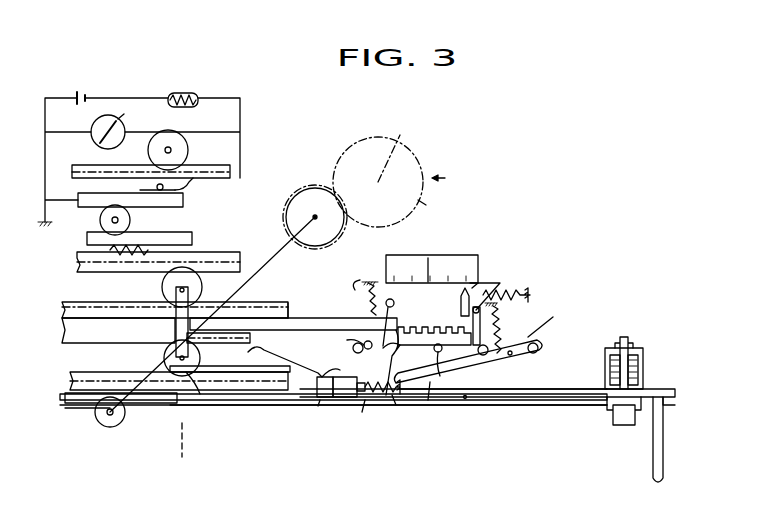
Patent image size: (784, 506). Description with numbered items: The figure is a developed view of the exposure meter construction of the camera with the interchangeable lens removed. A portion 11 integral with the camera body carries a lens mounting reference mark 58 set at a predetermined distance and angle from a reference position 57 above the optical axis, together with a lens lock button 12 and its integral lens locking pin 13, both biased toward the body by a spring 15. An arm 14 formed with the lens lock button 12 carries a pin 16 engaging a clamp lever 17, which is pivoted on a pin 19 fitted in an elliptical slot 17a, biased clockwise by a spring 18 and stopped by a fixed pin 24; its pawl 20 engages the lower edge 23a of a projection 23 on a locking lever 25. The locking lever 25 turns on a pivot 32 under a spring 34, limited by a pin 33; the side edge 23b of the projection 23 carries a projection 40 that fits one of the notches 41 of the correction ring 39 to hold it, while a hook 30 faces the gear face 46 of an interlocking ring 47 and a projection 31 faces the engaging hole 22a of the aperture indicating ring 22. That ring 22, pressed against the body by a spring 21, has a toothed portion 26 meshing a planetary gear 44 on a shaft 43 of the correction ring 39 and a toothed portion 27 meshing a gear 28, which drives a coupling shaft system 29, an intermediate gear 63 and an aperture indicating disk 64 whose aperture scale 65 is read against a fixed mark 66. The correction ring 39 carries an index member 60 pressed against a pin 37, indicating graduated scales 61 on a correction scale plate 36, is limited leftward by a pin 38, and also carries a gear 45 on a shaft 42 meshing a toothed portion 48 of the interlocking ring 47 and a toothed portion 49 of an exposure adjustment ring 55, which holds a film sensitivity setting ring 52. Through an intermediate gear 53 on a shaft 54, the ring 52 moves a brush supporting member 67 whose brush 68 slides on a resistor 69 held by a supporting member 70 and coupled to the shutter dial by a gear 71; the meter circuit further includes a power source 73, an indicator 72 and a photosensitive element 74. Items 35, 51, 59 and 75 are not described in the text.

The camera body portion 11 is at (527, 400).
The lens lock button 12 is at (620, 428).
The lens locking pin 13 is at (652, 452).
The arm 14 is at (563, 388).
The spring 15 is at (640, 365).
The pin 16 is at (486, 331).
The clamp lever 17 is at (520, 357).
The elliptical slot 17a is at (564, 327).
The spring 18 is at (506, 329).
The pin 19 is at (539, 349).
The pawl 20 is at (428, 400).
The spring 21 is at (361, 419).
The aperture indicating ring 22 is at (266, 400).
The engaging hole 22a is at (320, 406).
The projection 23 is at (365, 353).
The lower edge 23a is at (396, 405).
The side edge 23b is at (420, 356).
The fixed pin 24 is at (503, 380).
The locking lever 25 is at (304, 360).
The toothed portion 26 is at (118, 371).
The toothed portion 27 is at (72, 405).
The gear 28 is at (120, 419).
The coupling shaft system 29 is at (270, 255).
The hook 30 is at (285, 359).
The projection 31 is at (303, 395).
The pivot 32 is at (340, 400).
The pin 33 is at (345, 341).
The spring 34 is at (347, 274).
The arm 35 is at (520, 334).
The correction scale plate 36 is at (445, 256).
The pin 37 is at (496, 284).
The pin 38 is at (360, 298).
The correction ring 39 is at (318, 318).
The projection 40 is at (396, 328).
The notches 41 is at (402, 313).
The shaft 42 is at (200, 290).
The shaft 43 is at (198, 398).
The planetary gear 44 is at (164, 360).
The gear 45 is at (162, 296).
The toothed portion 46 is at (216, 368).
The interlocking ring 47 is at (118, 345).
The toothed portion 48 is at (282, 304).
The toothed portion 49 is at (97, 302).
The plate 51 is at (80, 256).
The film sensitivity setting ring 52 is at (192, 238).
The intermediate gear 53 is at (131, 220).
The shaft 54 is at (90, 222).
The exposure adjustment ring 55 is at (222, 252).
The reference position 57 is at (186, 435).
The lens mounting reference mark 58 is at (465, 399).
The pointer 59 is at (478, 280).
The index member 60 is at (461, 304).
The graduated scales 61 is at (428, 256).
The intermediate gear 63 is at (318, 250).
The aperture indicating disk 64 is at (376, 168).
The aperture scale 65 is at (436, 205).
The fixed mark 66 is at (454, 175).
The brush supporting member 67 is at (185, 205).
The brush 68 is at (189, 190).
The resistor 69 is at (238, 178).
The supporting member 70 is at (232, 165).
The gear 71 is at (189, 150).
The indicator 72 is at (108, 115).
The power source 73 is at (80, 90).
The photosensitive element 74 is at (183, 92).
The meter pointer 75 is at (136, 114).